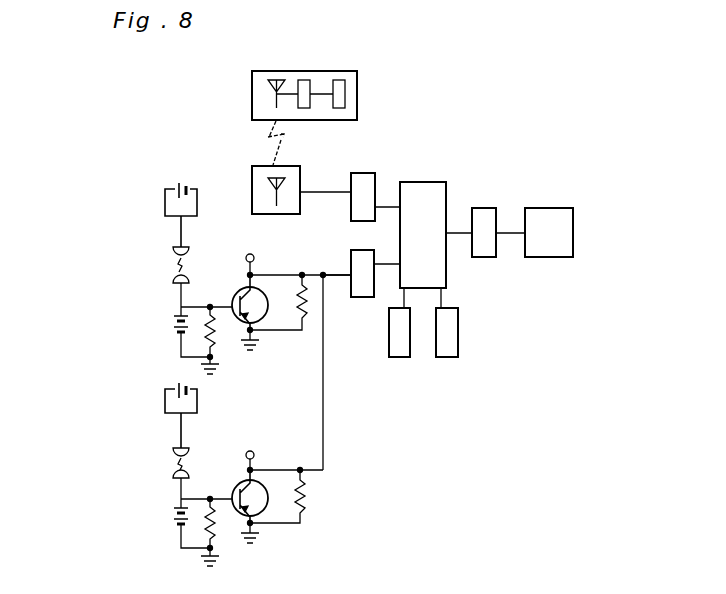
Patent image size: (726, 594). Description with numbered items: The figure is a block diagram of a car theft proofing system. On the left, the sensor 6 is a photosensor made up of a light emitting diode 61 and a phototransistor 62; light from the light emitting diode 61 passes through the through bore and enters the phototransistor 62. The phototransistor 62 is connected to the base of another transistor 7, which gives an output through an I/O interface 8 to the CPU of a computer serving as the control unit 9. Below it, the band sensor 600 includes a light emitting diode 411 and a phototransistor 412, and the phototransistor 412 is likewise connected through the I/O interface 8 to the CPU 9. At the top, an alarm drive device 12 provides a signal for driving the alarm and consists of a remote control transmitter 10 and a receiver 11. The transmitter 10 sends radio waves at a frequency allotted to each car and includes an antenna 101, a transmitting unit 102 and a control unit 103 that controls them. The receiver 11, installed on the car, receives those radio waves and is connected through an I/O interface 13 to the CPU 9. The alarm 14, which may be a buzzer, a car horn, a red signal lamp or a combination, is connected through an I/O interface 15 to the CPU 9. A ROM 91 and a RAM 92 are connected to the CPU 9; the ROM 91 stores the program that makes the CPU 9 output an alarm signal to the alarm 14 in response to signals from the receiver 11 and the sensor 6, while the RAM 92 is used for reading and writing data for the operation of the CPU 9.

The sensor 6 is at (132, 233).
The light emitting diode 61 is at (172, 247).
The phototransistor 62 is at (172, 283).
The transistor 7 is at (265, 318).
The I/O interface 8 is at (365, 297).
The control unit 9 is at (440, 182).
The ROM 91 is at (402, 357).
The RAM 92 is at (448, 357).
The remote control transmitter 10 is at (307, 80).
The antenna 101 is at (266, 80).
The transmitting unit 102 is at (302, 80).
The control unit 103 is at (342, 82).
The receiver 11 is at (300, 171).
The alarm drive device 12 is at (326, 127).
The I/O interface 13 is at (372, 173).
The alarm 14 is at (552, 208).
The I/O interface 15 is at (493, 208).
The light emitting diode 411 is at (190, 448).
The phototransistor 412 is at (190, 478).
The band sensor 600 is at (235, 430).